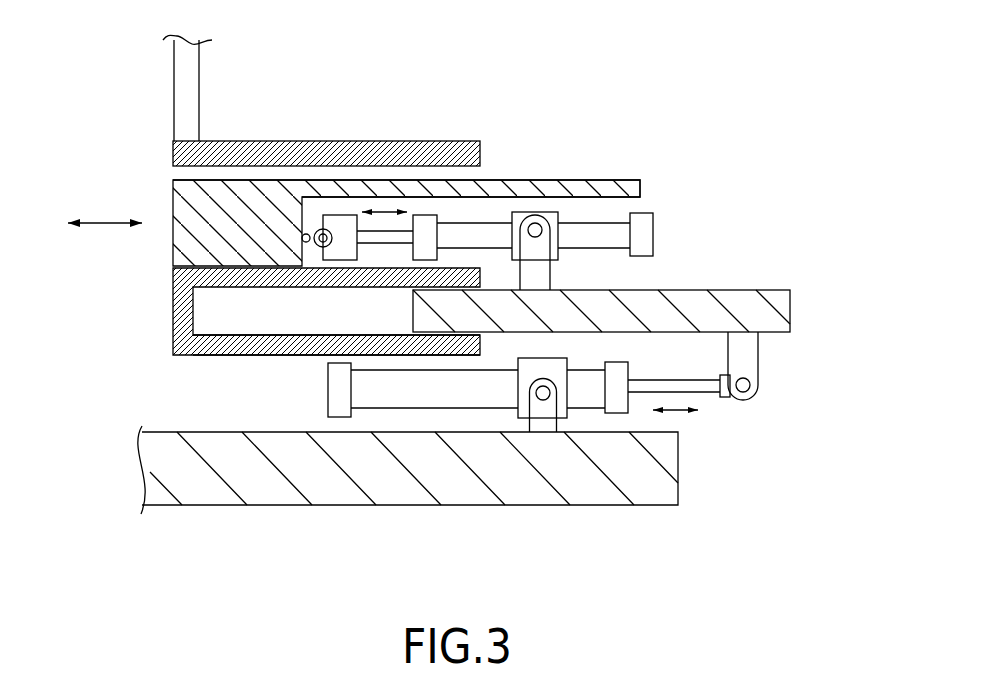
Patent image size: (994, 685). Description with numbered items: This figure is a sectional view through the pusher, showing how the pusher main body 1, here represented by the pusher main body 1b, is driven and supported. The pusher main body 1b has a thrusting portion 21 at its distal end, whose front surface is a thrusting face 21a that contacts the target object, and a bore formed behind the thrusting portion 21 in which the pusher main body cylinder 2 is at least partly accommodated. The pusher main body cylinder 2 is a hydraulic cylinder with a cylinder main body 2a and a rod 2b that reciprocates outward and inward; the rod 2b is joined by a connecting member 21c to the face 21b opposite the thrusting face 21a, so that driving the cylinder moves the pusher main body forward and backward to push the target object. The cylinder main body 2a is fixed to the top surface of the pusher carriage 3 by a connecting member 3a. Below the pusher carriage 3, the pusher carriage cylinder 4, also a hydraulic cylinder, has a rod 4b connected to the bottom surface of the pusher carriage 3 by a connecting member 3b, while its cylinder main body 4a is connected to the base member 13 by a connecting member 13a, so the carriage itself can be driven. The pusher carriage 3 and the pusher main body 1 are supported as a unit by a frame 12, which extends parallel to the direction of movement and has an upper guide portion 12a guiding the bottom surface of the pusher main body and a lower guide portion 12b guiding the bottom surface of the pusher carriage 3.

The pusher main body 1 is at (679, 96).
The pusher main body 1b is at (592, 179).
The pusher main body cylinder 2 is at (672, 235).
The cylinder main body 2a is at (597, 250).
The rod 2b is at (408, 218).
The pusher carriage 3 is at (765, 290).
The connecting member 3a is at (512, 224).
The connecting member 3b is at (758, 352).
The pusher carriage cylinder 4 is at (321, 388).
The cylinder main body 4a is at (410, 410).
The rod 4b is at (647, 398).
The frame 12 is at (245, 139).
The upper guide portion 12a is at (185, 330).
The lower guide portion 12b is at (223, 347).
The base member 13 is at (678, 463).
The connecting member 13a is at (523, 421).
The thrusting portion 21 is at (182, 213).
The thrusting face 21a is at (172, 190).
The face 21b is at (300, 244).
The connecting member 21c is at (322, 228).